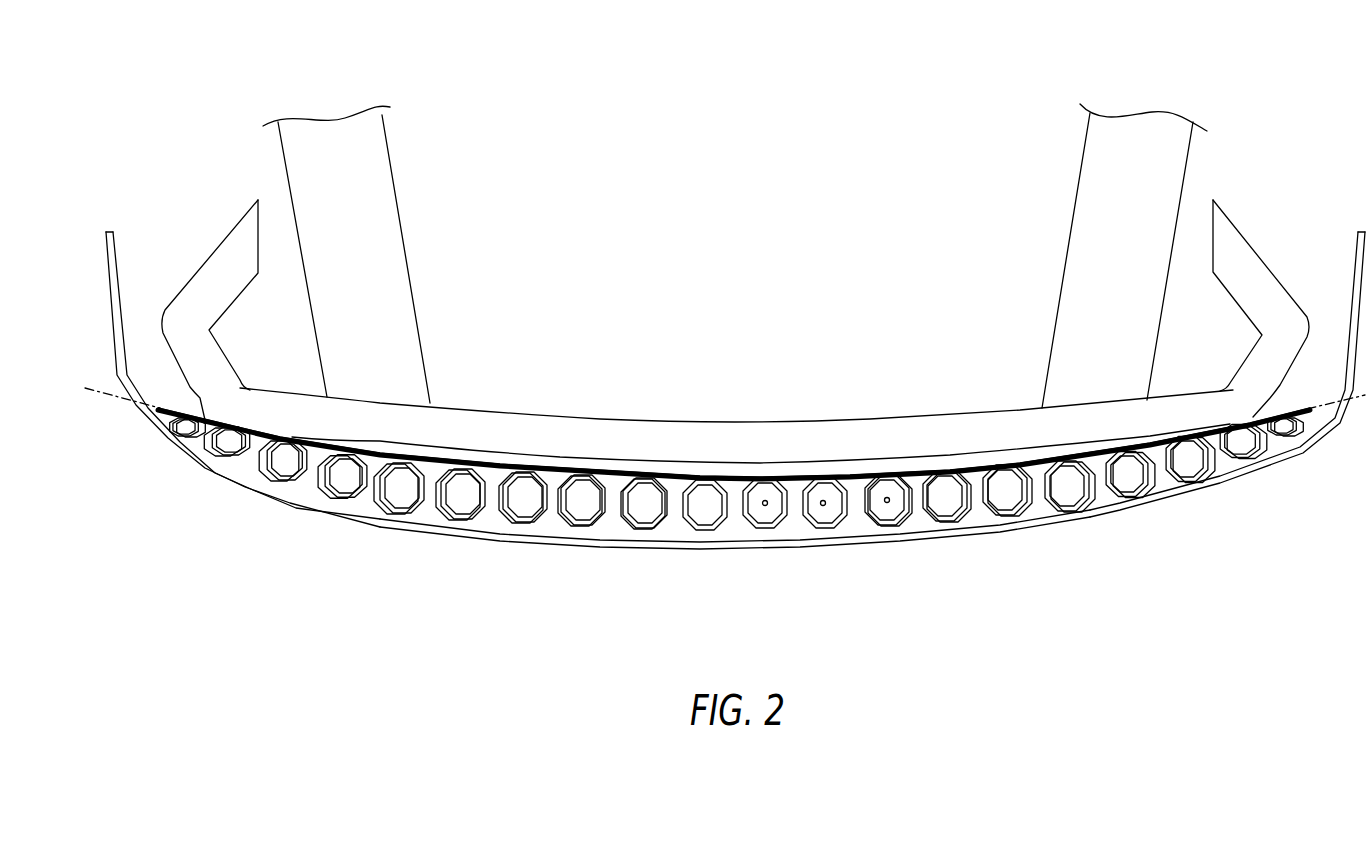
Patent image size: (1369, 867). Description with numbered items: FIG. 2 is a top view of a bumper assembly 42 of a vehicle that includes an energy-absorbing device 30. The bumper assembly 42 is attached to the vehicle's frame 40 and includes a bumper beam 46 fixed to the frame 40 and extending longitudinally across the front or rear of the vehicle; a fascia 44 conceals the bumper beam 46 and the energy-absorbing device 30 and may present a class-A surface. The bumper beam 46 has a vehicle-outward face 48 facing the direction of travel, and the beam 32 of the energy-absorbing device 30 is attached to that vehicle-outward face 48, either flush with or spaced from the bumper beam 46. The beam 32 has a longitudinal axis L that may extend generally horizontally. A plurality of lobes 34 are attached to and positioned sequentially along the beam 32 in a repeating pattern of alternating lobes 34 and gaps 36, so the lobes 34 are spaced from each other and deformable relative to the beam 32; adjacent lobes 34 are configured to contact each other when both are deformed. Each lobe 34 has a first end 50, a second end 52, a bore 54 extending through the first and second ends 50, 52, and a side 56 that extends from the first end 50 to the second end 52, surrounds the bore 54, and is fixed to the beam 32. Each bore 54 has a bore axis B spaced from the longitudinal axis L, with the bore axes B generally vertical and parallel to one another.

The energy-absorbing device 30 is at (172, 405).
The beam 32 is at (493, 462).
The lobes 34 is at (527, 523).
The gaps 36 is at (553, 520).
The frame 40 is at (405, 252).
The bumper assembly 42 is at (253, 555).
The fascia 44 is at (922, 542).
The bumper beam 46 is at (875, 418).
The vehicle-outward face 48 is at (890, 465).
The first end 50 is at (208, 447).
The second end 52 is at (243, 467).
The bore 54 is at (767, 527).
The side 56 is at (770, 528).
The bore axis B is at (887, 497).
The longitudinal axis L is at (100, 392).